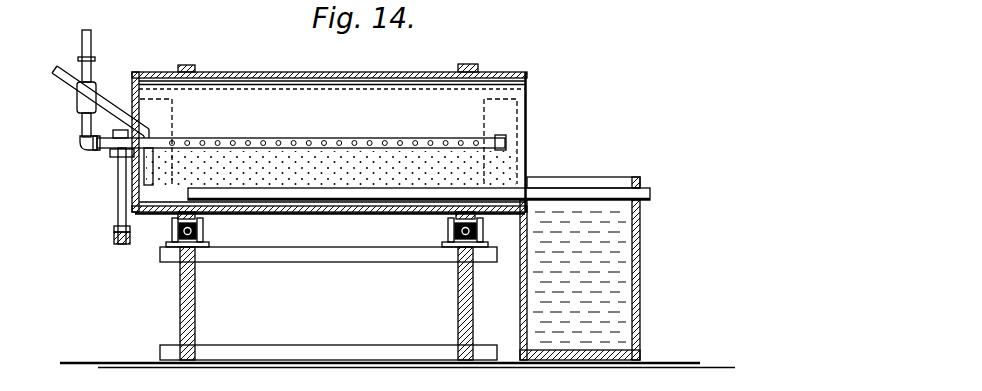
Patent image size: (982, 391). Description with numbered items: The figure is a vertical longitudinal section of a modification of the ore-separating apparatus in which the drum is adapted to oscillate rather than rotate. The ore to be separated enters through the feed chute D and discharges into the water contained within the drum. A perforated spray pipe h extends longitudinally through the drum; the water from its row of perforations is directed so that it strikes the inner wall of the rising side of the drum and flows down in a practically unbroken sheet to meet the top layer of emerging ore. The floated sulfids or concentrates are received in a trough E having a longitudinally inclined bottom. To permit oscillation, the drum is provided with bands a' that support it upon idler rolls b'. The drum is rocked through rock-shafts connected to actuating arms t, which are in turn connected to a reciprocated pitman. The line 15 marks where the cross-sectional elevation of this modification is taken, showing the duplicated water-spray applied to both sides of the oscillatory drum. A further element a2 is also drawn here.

The feed chute D is at (72, 78).
The perforated spray pipe h is at (412, 133).
The bands a' is at (327, 59).
The drain cock a2 is at (114, 241).
The actuating arms t is at (118, 189).
The trough E is at (653, 191).
The idler rolls b' is at (324, 229).
The section line 15 is at (267, 55).